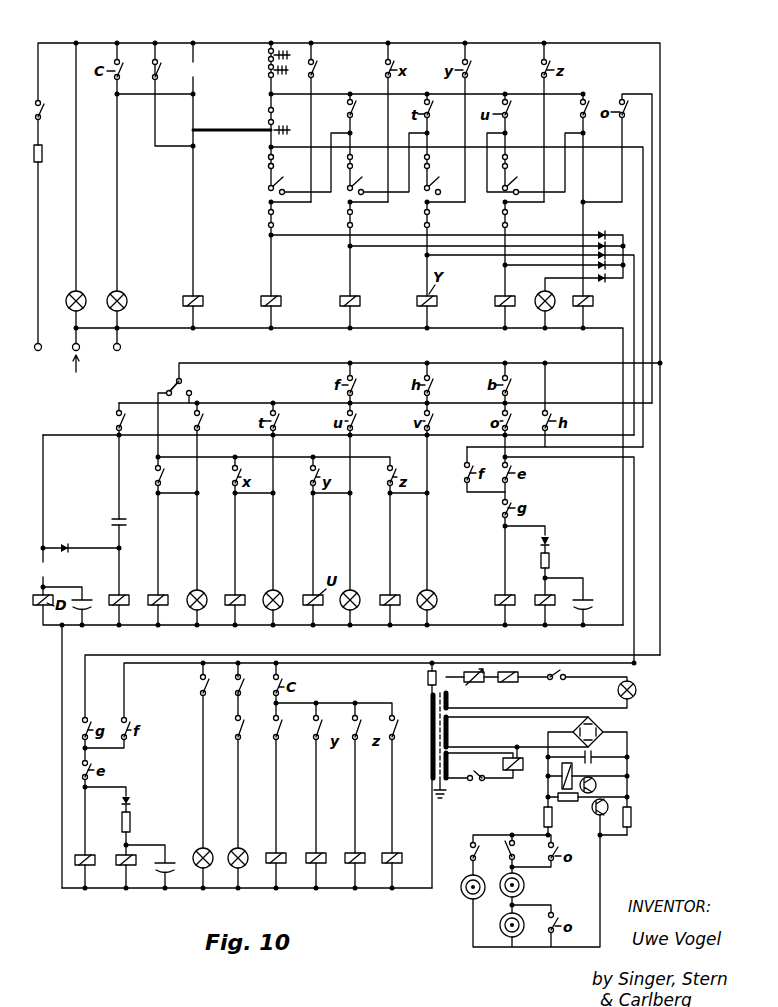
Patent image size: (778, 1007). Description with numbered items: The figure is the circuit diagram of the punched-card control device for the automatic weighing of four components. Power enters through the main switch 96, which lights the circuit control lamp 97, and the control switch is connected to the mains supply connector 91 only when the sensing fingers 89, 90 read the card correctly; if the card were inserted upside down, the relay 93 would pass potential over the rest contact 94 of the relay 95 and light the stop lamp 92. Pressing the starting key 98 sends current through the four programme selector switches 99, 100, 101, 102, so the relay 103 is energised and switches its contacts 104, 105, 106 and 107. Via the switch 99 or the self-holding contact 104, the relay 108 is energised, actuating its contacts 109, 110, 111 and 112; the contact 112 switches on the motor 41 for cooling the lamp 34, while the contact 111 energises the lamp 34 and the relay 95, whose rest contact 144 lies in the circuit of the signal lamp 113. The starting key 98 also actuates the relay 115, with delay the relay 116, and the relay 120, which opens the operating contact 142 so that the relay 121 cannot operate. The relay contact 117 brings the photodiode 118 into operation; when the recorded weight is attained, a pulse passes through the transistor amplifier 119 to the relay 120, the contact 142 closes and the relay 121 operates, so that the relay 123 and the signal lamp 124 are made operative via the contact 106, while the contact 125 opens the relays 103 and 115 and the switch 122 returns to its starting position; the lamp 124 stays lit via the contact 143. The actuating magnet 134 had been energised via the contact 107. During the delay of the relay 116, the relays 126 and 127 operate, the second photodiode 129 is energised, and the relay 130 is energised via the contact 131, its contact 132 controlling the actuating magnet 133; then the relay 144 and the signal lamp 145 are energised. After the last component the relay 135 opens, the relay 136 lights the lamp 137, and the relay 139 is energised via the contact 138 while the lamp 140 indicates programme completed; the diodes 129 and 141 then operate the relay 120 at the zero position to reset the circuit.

The main switch 96 is at (44, 118).
The rest contact j94 94 is at (153, 71).
The sensing finger 89 is at (266, 57).
The sensing finger 90 is at (262, 69).
The starting key 98 is at (268, 130).
The self-holding contact w104 104 is at (313, 70).
The contact s131 131 is at (348, 114).
The contact V138 138 is at (582, 112).
The contact w105 105 is at (268, 160).
The switch 99 is at (294, 184).
The switch 100 is at (374, 184).
The switch 101 is at (451, 184).
The switch 102 is at (524, 184).
The contact s125 125 is at (268, 221).
The circuit control lamp 97 is at (84, 294).
The stop lamp 92 is at (124, 294).
The relay C93 93 is at (199, 294).
The relay W103 103 is at (277, 294).
The relay X130 130 is at (355, 294).
The relay Z135 135 is at (505, 294).
The lamp 140 is at (543, 290).
The relay O139 139 is at (593, 301).
The mains supply connector 91 is at (68, 374).
The switch b122 122 is at (188, 384).
The contact k109 109 is at (116, 421).
The contact s143 143 is at (181, 421).
The contact w106 106 is at (163, 477).
The relay K108 108 is at (124, 596).
The relay S123 123 is at (163, 596).
The signal lamp 124 is at (203, 594).
The relay T144 / rest contact j144 144 is at (241, 596).
The signal lamp 145 is at (279, 594).
The relay V136 136 is at (394, 595).
The lamp 137 is at (434, 594).
The relay E115 115 is at (494, 602).
The relay F116 116 is at (553, 593).
The contact k112 112 is at (200, 690).
The contact k110 110 is at (215, 736).
The contact w107 107 is at (263, 736).
The contact x132 132 is at (300, 736).
The relay G126 126 is at (101, 871).
The relay H127 127 is at (142, 871).
The motor 41 is at (207, 852).
The signal lamp 113 is at (242, 852).
The actuating magnet 134 is at (281, 853).
The actuating magnet 133 is at (321, 853).
The relay J95 95 is at (491, 690).
The contact k111 111 is at (558, 691).
The lamp 34 is at (636, 690).
The relay B121 121 is at (515, 757).
The relay A120 120 is at (561, 782).
The transistor amplifier 119 is at (640, 781).
The operating contact a142 142 is at (473, 791).
The photodiode 118 is at (456, 904).
The relay contact e117 117 is at (471, 852).
The second photodiode 129 is at (524, 885).
The diode 141 is at (500, 929).